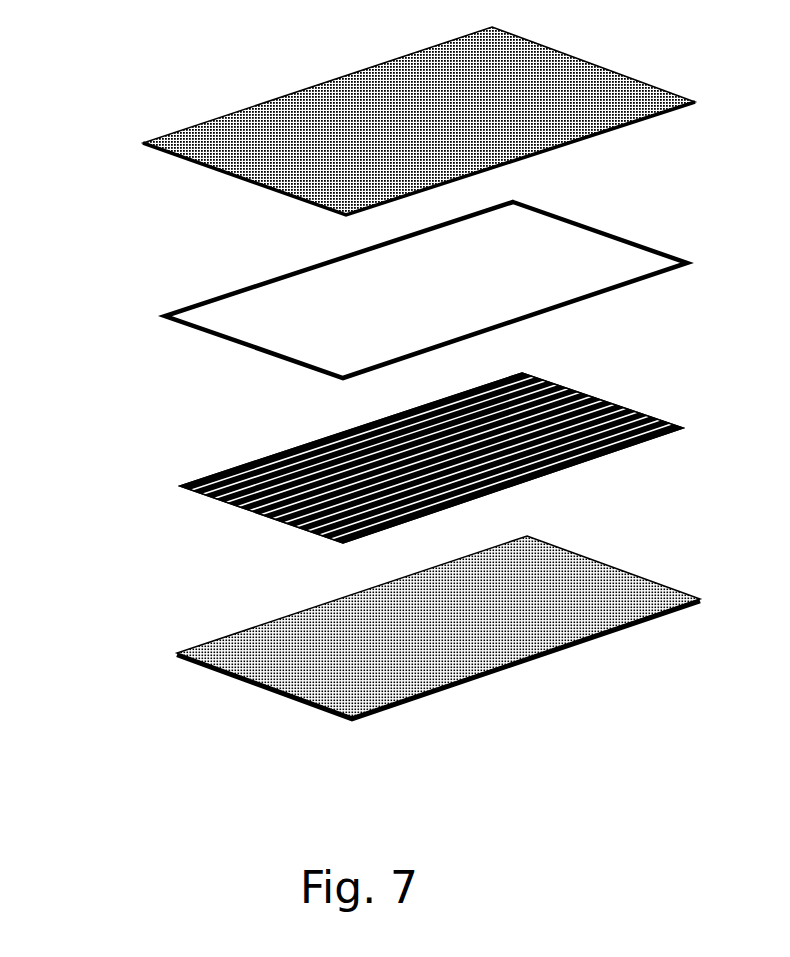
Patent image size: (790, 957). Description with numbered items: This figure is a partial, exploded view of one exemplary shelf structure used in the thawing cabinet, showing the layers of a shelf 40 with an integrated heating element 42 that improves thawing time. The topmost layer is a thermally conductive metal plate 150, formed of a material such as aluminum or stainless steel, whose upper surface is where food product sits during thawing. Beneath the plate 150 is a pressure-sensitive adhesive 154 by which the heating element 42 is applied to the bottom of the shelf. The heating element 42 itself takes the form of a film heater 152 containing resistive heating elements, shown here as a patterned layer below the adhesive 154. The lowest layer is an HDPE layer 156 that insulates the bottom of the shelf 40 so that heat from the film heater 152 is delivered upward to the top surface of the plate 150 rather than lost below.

The shelf 40 is at (100, 77).
The heating element 42 is at (647, 388).
The thermally conductive metal plate 150 is at (202, 165).
The pressure-sensitive adhesive 154 is at (220, 335).
The film heater 152 is at (213, 502).
The HDPE layer 156 is at (240, 680).